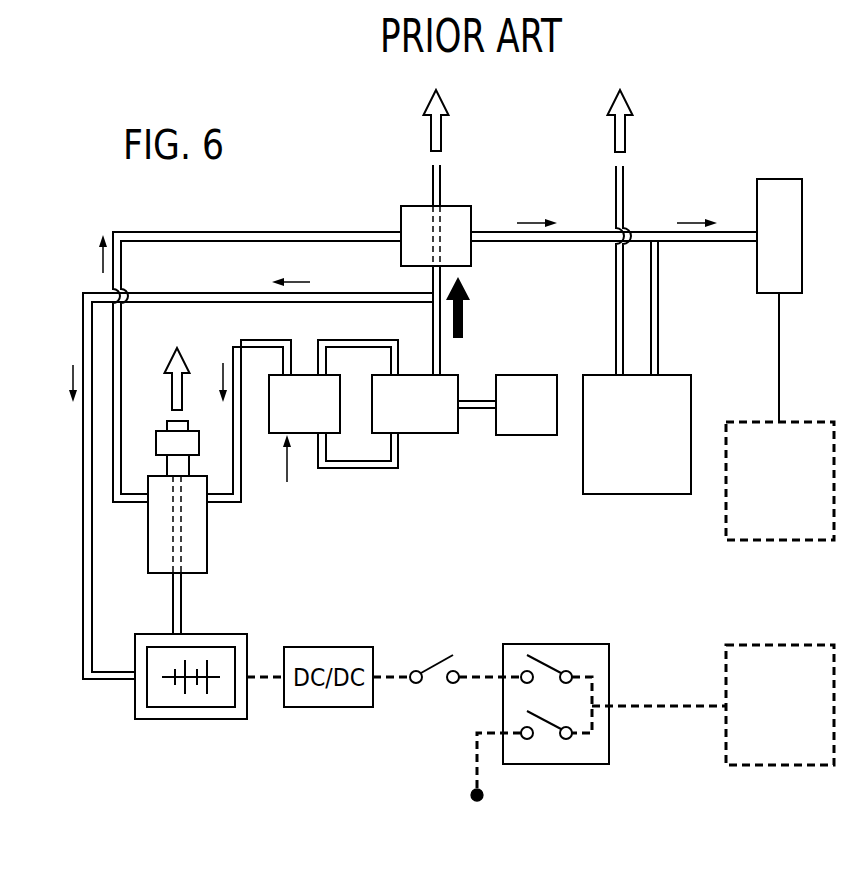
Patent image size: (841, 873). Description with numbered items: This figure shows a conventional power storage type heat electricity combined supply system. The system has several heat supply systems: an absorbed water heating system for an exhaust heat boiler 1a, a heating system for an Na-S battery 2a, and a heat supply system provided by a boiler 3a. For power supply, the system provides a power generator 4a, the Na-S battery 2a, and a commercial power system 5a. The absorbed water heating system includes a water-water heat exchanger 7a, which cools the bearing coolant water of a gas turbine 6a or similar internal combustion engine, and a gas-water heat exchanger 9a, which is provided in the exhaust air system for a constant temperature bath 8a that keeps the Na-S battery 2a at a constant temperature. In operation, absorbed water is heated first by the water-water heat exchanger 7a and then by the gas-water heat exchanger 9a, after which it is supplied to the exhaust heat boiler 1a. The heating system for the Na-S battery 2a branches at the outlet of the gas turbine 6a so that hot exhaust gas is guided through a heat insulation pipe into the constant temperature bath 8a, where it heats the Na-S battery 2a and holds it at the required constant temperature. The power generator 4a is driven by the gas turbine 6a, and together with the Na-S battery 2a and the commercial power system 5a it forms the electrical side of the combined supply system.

The exhaust heat boiler 1a is at (448, 210).
The Na-S battery 2a is at (223, 698).
The boiler 3a is at (620, 487).
The power generator 4a is at (510, 428).
The commercial power system 5a is at (470, 795).
The gas turbine 6a is at (438, 430).
The water-water heat exchanger 7a is at (276, 420).
The constant temperature bath 8a is at (143, 712).
The gas-water heat exchanger 9a is at (207, 553).